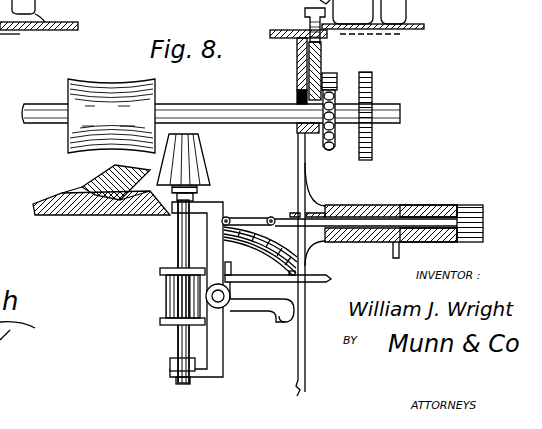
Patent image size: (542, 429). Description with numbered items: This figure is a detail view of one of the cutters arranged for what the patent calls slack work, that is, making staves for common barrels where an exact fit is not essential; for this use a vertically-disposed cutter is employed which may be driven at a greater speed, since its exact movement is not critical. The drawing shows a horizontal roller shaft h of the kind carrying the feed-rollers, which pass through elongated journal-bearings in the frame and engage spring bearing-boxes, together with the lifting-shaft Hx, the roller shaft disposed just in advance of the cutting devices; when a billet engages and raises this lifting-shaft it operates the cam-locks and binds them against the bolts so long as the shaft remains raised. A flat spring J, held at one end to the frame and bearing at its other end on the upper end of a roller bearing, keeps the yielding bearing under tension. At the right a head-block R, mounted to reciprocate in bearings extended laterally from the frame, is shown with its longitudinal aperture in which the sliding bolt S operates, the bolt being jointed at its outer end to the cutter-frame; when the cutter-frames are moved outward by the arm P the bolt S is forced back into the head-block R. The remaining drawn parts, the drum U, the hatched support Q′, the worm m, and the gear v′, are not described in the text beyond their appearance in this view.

The drum U is at (111, 116).
The roller shaft h is at (244, 115).
The lifting-shaft Hx is at (245, 122).
The hatched support block Q′ is at (86, 176).
The flat spring J is at (299, 31).
The worm gear m is at (330, 80).
The spur gear v′ is at (373, 88).
The sliding bolt S is at (369, 210).
The head-block R is at (426, 207).
The arm P is at (484, 239).